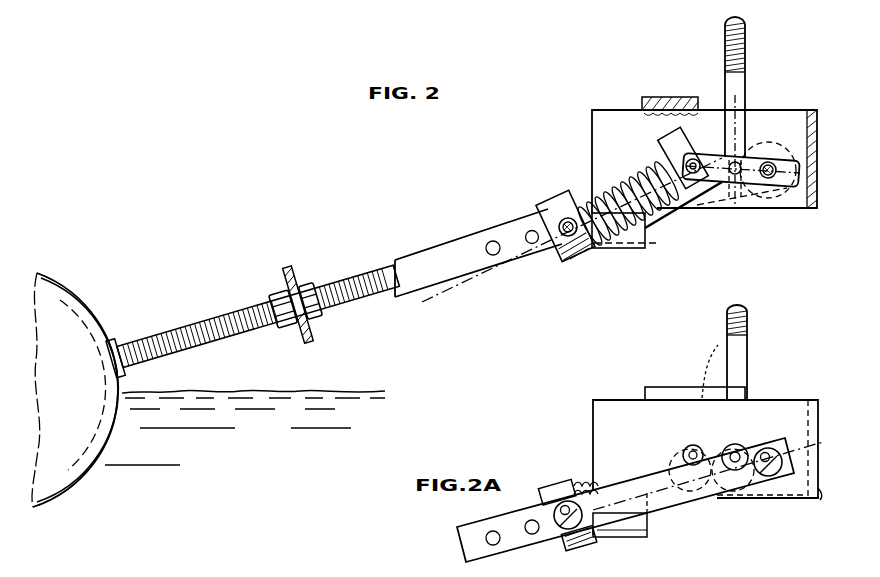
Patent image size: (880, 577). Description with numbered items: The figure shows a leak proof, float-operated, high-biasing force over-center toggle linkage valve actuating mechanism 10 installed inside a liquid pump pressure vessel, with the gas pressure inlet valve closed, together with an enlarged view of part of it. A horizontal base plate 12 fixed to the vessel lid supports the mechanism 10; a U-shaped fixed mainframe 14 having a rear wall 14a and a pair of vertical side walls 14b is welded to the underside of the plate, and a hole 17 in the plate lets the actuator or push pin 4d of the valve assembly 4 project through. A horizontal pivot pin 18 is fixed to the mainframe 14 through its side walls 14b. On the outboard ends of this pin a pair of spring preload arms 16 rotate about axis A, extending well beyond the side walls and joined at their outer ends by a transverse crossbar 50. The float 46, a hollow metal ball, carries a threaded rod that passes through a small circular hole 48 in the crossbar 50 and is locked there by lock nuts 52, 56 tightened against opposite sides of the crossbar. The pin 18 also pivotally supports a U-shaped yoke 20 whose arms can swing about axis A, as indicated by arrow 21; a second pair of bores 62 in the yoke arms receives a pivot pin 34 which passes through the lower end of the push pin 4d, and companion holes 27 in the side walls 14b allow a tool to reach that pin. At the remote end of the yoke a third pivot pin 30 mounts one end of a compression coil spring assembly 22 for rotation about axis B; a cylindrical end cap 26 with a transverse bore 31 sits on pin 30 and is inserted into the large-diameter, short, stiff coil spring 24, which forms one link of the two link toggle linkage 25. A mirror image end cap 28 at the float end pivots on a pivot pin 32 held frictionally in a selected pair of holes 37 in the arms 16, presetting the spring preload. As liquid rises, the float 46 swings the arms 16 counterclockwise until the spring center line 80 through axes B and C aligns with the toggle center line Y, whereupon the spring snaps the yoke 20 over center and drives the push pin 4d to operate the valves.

In FIG. 2, the valve assembly 4 is at (745, 52).
In FIG. 2, the actuator or push pin 4d is at (734, 146).
In FIG. 2, the over-center toggle linkage valve actuating mechanism 10 is at (535, 151).
In FIG. 2A, the over-center toggle linkage valve actuating mechanism 10 is at (541, 413).
In FIG. 2, the horizontal base plate 12 is at (640, 97).
In FIG. 2A, the horizontal base plate 12 is at (670, 387).
In FIG. 2, the fixed mainframe 14 is at (823, 109).
In FIG. 2A, the fixed mainframe 14 is at (810, 400).
In FIG. 2, the base portion or rear wall 14a is at (818, 200).
In FIG. 2A, the base portion or rear wall 14a is at (822, 497).
In FIG. 2, the side walls 14b is at (773, 218).
In FIG. 2A, the side walls 14b is at (788, 410).
In FIG. 2, the spring preload arms 16 is at (443, 250).
In FIG. 2A, the spring preload arms 16 is at (473, 548).
In FIG. 2A, the hole 17 is at (712, 372).
In FIG. 2, the horizontal pivot pin 18 is at (778, 200).
In FIG. 2A, the horizontal pivot pin 18 is at (787, 462).
In FIG. 2, the U-shaped lever or yoke 20 is at (798, 157).
In FIG. 2, the arrow 21 is at (769, 142).
In FIG. 2, the compression coil spring assembly 22 is at (611, 161).
In FIG. 2A, the compression coil spring assembly 22 is at (577, 474).
In FIG. 2, the compression coil spring 24 is at (630, 250).
In FIG. 2A, the two link toggle linkage 25 is at (675, 460).
In FIG. 2, the spring cylindrical end cap 26 is at (692, 90).
In FIG. 2A, the companion holes 27 is at (735, 444).
In FIG. 2, the spring end cap 28 is at (555, 203).
In FIG. 2A, the spring end cap 28 is at (573, 552).
In FIG. 2, the third pivot pin 30 is at (687, 158).
In FIG. 2A, the third pivot pin 30 is at (693, 445).
In FIG. 2, the transverse internal bore 31 is at (698, 212).
In FIG. 2, the pivot pin 32 is at (562, 254).
In FIG. 2A, the pivot pin 32 is at (555, 530).
In FIG. 2, the pivot pin 34 is at (733, 176).
In FIG. 2A, the pivot pin 34 is at (752, 490).
In FIG. 2, the holes 37 is at (525, 237).
In FIG. 2, the float 46 is at (74, 303).
In FIG. 2, the circular hole 48 is at (301, 316).
In FIG. 2, the transverse crossbar 50 is at (298, 304).
In FIG. 2, the lock nut 52 is at (310, 301).
In FIG. 2, the lock nut 56 is at (283, 309).
In FIG. 2, the aligned bores 62 is at (744, 186).
In FIG. 2, the center line 80 is at (458, 296).